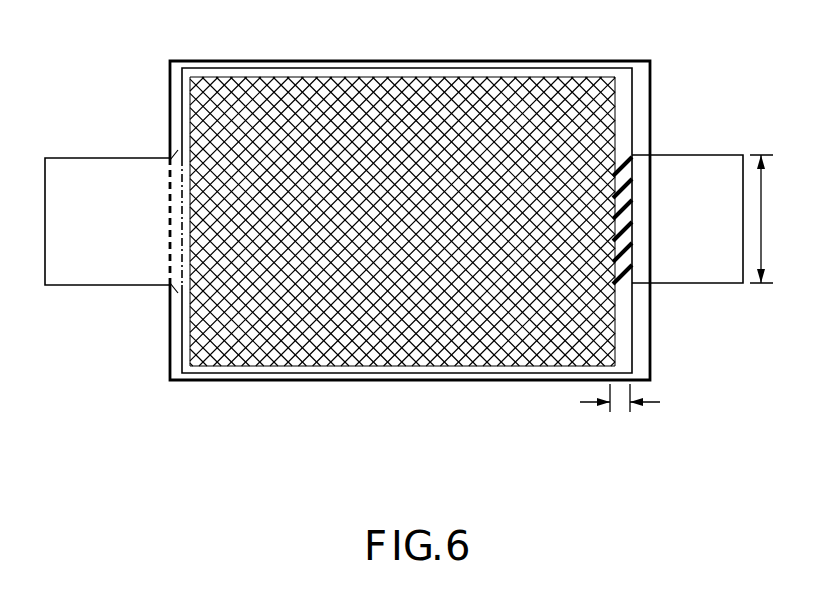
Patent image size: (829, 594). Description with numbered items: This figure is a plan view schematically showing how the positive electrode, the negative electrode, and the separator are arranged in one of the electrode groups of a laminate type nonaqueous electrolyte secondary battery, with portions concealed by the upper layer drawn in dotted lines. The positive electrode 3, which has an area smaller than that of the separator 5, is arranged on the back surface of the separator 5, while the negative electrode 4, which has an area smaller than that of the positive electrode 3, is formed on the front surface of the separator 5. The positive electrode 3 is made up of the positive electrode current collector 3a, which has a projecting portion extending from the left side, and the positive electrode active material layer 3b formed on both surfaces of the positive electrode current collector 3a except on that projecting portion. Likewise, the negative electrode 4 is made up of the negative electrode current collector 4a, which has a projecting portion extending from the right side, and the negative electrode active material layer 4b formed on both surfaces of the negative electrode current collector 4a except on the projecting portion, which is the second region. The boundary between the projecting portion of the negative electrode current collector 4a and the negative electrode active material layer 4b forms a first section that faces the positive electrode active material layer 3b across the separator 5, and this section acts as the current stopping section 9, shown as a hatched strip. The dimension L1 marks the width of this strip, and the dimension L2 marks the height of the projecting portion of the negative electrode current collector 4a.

The positive electrode 3 is at (234, 62).
The positive electrode current collector 3a is at (80, 176).
The positive electrode active material layer 3b is at (191, 78).
The negative electrode 4 is at (581, 73).
The negative electrode current collector 4a is at (712, 170).
The negative electrode active material layer 4b is at (508, 76).
The separator 5 is at (641, 70).
The current stopping section 9 is at (632, 209).
The width of insulating layer L1 is at (620, 415).
The width of tab L2 is at (770, 219).